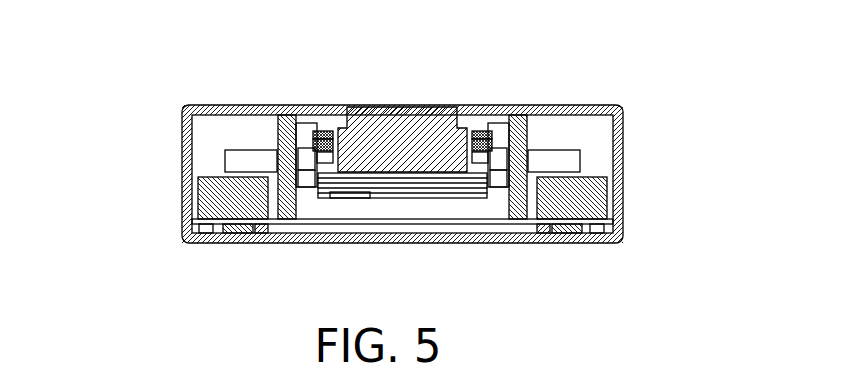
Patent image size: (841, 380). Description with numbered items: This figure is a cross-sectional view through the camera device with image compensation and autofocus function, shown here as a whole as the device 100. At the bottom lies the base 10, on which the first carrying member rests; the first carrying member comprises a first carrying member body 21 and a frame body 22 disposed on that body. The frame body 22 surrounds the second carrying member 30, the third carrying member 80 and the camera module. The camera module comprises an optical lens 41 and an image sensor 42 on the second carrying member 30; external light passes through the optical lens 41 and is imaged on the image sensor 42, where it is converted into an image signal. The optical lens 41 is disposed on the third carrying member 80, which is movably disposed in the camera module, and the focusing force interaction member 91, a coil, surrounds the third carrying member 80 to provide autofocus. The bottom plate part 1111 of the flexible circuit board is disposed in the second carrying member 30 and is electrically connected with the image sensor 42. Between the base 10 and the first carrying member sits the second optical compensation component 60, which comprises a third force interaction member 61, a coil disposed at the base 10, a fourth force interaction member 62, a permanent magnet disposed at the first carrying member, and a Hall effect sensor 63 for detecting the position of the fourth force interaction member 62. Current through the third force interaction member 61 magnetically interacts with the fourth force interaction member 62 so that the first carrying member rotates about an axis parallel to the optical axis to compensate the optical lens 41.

The camera module 100 is at (181, 146).
The base 10 is at (560, 238).
The first carrying member body 21 is at (503, 222).
The frame body 22 is at (282, 130).
The second carrying member 30 is at (307, 187).
The optical lens 41 is at (415, 123).
The image sensor 42 is at (445, 182).
The second optical compensation component 60 is at (102, 220).
The third force interaction member 61 is at (208, 227).
The fourth force interaction member 62 is at (217, 200).
The Hall effect sensor 63 is at (237, 233).
The third carrying member 80 is at (327, 133).
The focusing force interaction member 91 is at (317, 143).
The bottom plate part 1111 is at (347, 197).